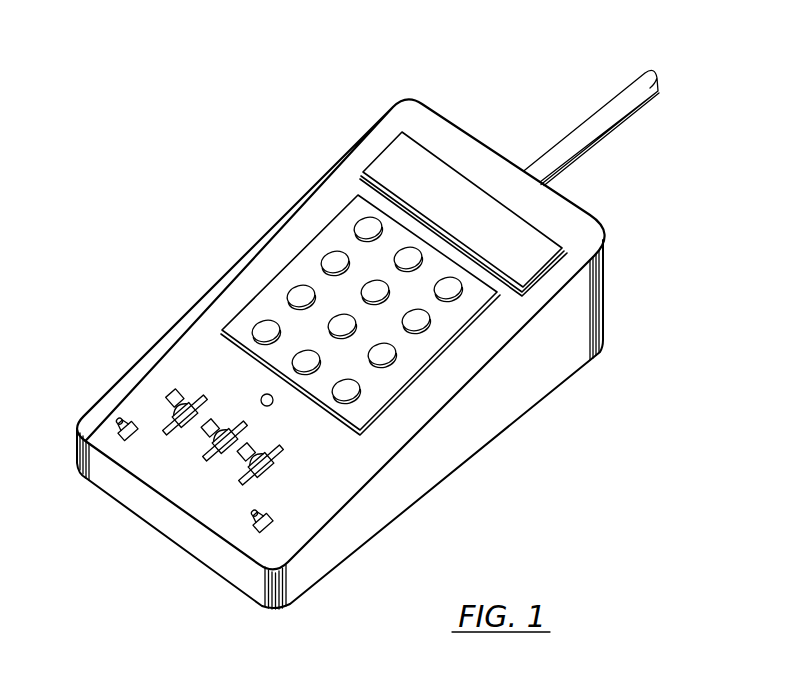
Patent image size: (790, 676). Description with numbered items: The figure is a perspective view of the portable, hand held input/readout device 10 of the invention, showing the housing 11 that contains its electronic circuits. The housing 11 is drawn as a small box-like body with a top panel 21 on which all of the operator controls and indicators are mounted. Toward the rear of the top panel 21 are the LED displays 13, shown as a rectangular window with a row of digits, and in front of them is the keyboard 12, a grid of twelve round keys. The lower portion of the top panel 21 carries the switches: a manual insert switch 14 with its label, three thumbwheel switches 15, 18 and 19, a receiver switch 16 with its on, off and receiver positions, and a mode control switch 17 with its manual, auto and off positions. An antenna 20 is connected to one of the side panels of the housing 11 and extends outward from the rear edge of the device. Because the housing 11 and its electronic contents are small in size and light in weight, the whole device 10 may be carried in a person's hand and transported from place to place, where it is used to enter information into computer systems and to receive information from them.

The portable, hand held input/readout device 10 is at (365, 354).
The housing 11 is at (597, 313).
The keyboard 12 is at (318, 245).
The LED displays 13 is at (393, 158).
The manual insert switch 14 is at (262, 395).
The thumbwheel switch 15 is at (187, 392).
The receiver switch 16 is at (122, 423).
The mode control switch 17 is at (254, 518).
The thumbwheel switch 18 is at (205, 453).
The thumbwheel switch 19 is at (268, 460).
The antenna 20 is at (569, 133).
The top panel 21 is at (228, 286).